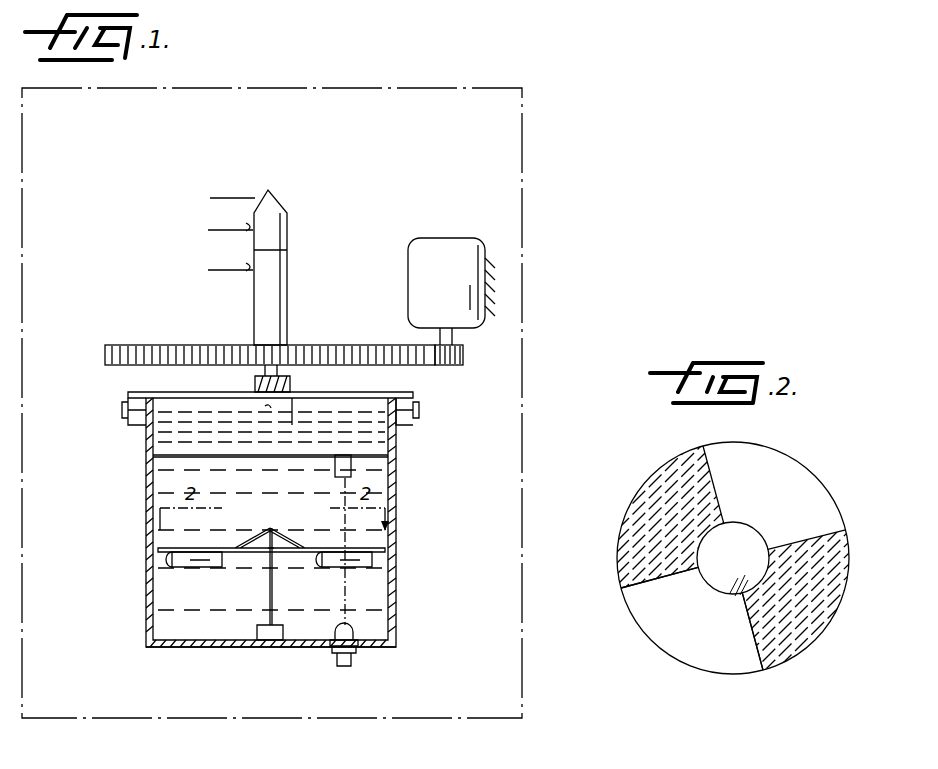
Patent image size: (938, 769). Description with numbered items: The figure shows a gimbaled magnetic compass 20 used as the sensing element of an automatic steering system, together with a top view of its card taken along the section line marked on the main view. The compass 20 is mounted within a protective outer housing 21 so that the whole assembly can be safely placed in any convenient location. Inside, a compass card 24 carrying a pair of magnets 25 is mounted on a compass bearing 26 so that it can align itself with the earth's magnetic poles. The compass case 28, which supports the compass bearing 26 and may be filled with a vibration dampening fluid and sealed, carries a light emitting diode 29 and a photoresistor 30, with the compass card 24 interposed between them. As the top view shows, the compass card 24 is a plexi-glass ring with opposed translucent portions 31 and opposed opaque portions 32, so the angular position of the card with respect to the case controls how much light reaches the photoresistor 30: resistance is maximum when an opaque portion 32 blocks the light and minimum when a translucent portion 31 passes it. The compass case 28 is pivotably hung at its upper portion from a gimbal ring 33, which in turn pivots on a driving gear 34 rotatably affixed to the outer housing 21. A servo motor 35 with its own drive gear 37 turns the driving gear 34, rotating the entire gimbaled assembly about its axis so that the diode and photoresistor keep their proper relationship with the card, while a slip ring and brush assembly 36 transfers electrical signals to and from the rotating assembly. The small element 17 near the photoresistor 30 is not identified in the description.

In FIG. 1, the compass 20 is at (400, 456).
In FIG. 1, the protective outer housing 21 is at (522, 255).
In FIG. 1, the level float 17 is at (349, 531).
In FIG. 1, the compass card 24 is at (305, 545).
In FIG. 2, the compass card 24 is at (645, 648).
In FIG. 1, the magnets 25 is at (172, 560).
In FIG. 2, the magnets 25 is at (640, 522).
In FIG. 1, the compass bearing 26 is at (265, 548).
In FIG. 1, the compass case 28 is at (158, 648).
In FIG. 1, the light emitting diode 29 is at (335, 638).
In FIG. 1, the photoresistor 30 is at (352, 468).
In FIG. 2, the translucent portions 31 is at (765, 472).
In FIG. 2, the opaque portions 32 is at (624, 581).
In FIG. 1, the gimbal ring 33 is at (125, 418).
In FIG. 1, the driving gear 34 is at (105, 358).
In FIG. 1, the servo motor 35 is at (462, 246).
In FIG. 1, the slip ring and brush assembly 36 is at (290, 275).
In FIG. 1, the drive gear 37 is at (460, 365).